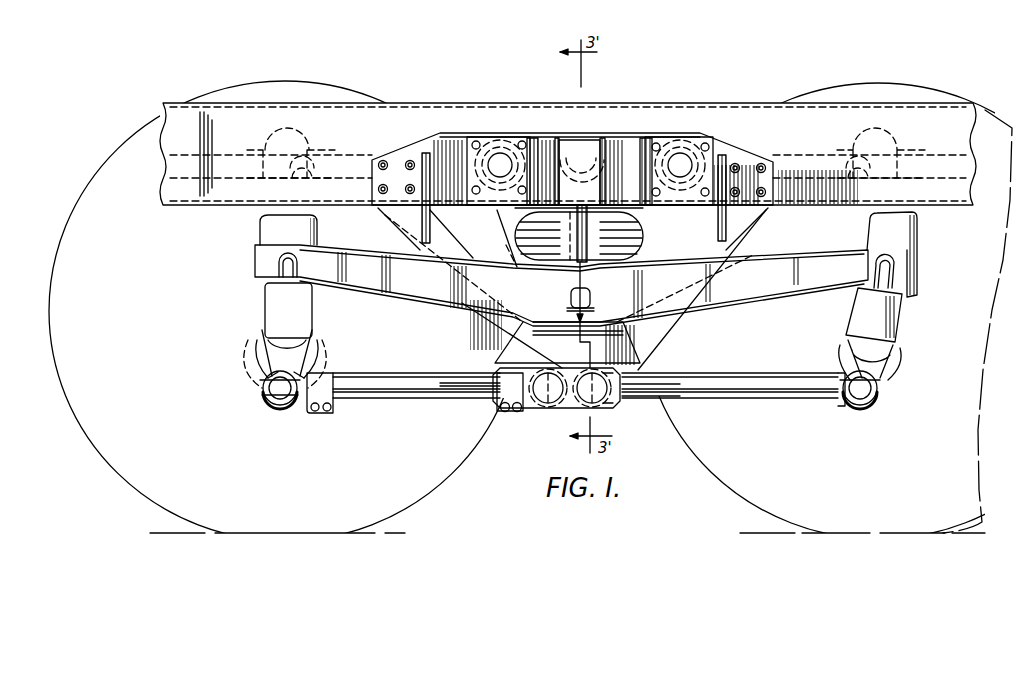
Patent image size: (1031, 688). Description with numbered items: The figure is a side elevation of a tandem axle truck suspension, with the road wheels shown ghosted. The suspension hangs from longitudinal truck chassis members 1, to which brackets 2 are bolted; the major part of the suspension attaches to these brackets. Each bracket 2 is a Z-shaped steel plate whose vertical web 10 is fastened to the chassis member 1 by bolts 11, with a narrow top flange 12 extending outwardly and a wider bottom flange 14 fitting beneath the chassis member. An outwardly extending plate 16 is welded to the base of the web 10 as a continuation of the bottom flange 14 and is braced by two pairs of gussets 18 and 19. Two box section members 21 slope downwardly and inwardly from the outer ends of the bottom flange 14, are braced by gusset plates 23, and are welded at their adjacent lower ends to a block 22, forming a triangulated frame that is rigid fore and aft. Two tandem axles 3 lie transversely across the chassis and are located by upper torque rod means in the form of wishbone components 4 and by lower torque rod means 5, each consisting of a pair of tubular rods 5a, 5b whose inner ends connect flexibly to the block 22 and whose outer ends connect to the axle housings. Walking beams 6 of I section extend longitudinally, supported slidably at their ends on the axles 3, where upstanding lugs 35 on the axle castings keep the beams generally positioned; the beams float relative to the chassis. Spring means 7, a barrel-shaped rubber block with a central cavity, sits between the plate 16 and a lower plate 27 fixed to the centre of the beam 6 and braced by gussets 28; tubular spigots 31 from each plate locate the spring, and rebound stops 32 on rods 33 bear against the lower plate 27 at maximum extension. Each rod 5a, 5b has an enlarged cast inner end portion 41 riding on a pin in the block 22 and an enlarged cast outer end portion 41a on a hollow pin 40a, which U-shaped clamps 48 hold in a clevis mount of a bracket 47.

The longitudinal truck chassis member 1 is at (385, 112).
The bracket 2 is at (447, 128).
The tandem axle 3 is at (266, 312).
The wishbone component 4 is at (347, 152).
The lower torque rod means 5 is at (388, 406).
The tubular rod 5a is at (455, 394).
The tubular rod 5b is at (668, 393).
The walking beam 6 is at (425, 292).
The spring means 7 is at (638, 252).
The vertical web 10 is at (466, 160).
The bolt 11 is at (411, 162).
The top flange 12 is at (656, 133).
The bottom flange 14 is at (706, 232).
The outwardly extending plate 16 is at (641, 205).
The gusset 18 is at (570, 165).
The gusset 19 is at (542, 158).
The box section member 21 is at (400, 228).
The block 22 is at (647, 372).
The gusset plate 23 is at (430, 224).
The lower plate 27 is at (516, 264).
The gusset 28 is at (570, 300).
The tubular spigot 31 is at (511, 238).
The rebound stop 32 is at (567, 310).
The rod 33 is at (588, 241).
The upstanding lug 35 is at (278, 264).
The hollow pin 40a is at (279, 392).
The enlarged cast end portion 41 is at (507, 414).
The enlarged cast end portion 41a is at (312, 414).
The bracket 47 is at (256, 362).
The U-shaped clamp 48 is at (265, 398).